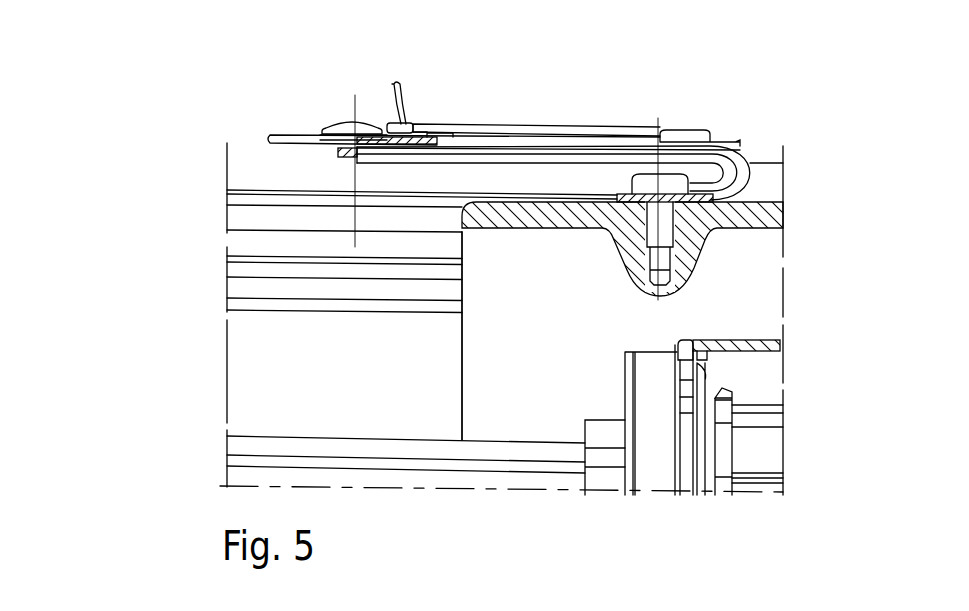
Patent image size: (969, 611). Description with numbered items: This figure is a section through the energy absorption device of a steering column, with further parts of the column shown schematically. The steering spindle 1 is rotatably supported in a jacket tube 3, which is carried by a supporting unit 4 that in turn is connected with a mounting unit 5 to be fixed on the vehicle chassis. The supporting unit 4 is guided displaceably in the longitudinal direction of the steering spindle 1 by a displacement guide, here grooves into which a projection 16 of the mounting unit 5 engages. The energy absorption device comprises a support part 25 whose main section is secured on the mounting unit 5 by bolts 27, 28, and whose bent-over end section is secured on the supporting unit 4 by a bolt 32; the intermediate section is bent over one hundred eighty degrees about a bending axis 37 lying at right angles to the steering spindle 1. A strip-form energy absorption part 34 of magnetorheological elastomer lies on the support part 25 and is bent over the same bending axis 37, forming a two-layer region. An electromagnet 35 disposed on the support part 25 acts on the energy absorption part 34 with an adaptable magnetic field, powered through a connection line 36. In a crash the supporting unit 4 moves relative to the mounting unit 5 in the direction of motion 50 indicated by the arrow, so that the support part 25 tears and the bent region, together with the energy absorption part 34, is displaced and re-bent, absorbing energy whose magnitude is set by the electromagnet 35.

The steering spindle 1 is at (605, 483).
The jacket tube 3 is at (752, 339).
The supporting unit 4 is at (755, 210).
The mounting unit 5 is at (215, 265).
The projection 16 is at (252, 219).
The support part 25 is at (398, 137).
The bolt 27 is at (345, 123).
The bolt 28 is at (680, 140).
The bolt 32 is at (650, 185).
The energy absorption part 34 is at (518, 157).
The electromagnet 35 is at (473, 130).
The connection line 36 is at (402, 118).
The bending axis 37 is at (713, 173).
The direction of motion 50 is at (808, 275).